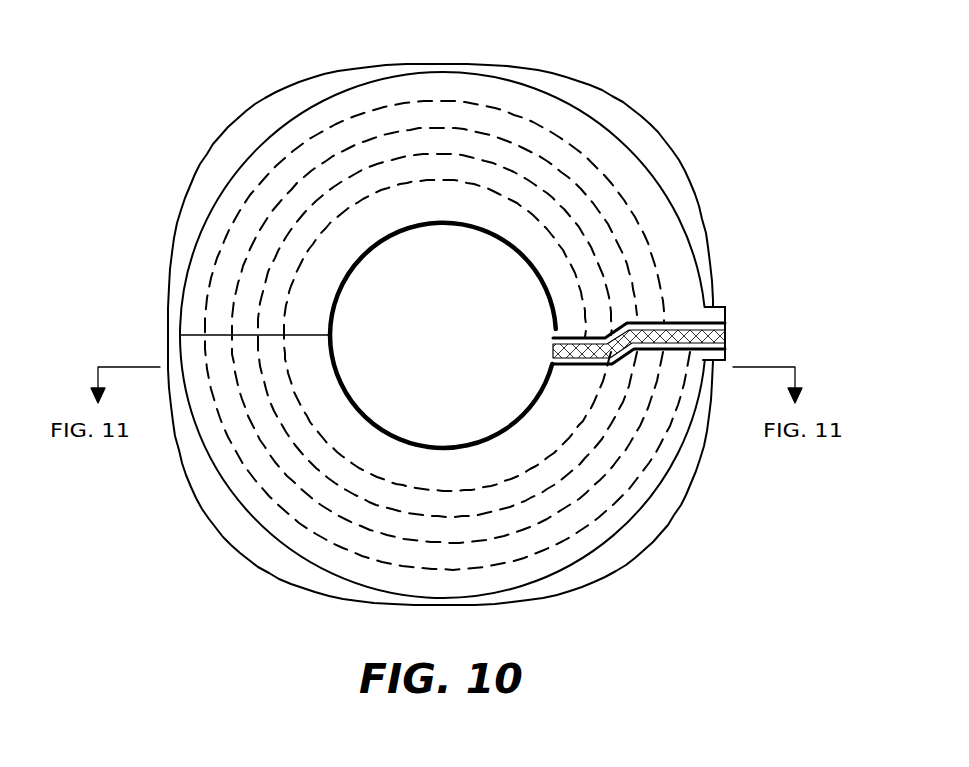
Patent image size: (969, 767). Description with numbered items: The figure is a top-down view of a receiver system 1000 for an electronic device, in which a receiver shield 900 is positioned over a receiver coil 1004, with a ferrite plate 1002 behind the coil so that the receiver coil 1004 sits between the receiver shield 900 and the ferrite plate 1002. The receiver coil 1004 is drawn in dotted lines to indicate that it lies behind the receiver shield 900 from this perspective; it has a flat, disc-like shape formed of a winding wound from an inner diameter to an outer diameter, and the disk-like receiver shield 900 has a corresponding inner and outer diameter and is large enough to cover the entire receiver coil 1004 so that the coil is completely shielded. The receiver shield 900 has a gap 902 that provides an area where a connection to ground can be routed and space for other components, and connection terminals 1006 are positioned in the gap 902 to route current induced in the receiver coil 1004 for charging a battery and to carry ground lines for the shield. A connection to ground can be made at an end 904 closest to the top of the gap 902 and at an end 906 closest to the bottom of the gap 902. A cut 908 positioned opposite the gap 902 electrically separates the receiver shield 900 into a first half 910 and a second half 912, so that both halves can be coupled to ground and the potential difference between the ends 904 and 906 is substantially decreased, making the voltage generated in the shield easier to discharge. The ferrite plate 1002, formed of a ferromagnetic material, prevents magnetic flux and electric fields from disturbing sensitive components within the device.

The receiver system 1000 is at (160, 66).
The ferrite plate 1002 is at (705, 202).
The receiver shield 900 is at (192, 257).
The cut 908 is at (195, 335).
The receiver coil 1004 is at (598, 172).
The first half 910 is at (457, 215).
The second half 912 is at (463, 475).
The connection terminals 1006 is at (727, 332).
The end 904 is at (680, 323).
The end 906 is at (684, 350).
The gap 902 is at (745, 308).